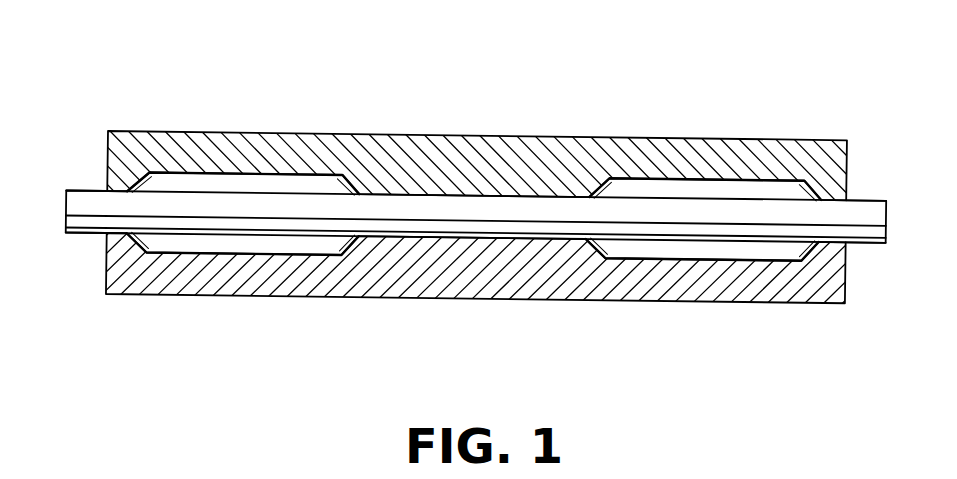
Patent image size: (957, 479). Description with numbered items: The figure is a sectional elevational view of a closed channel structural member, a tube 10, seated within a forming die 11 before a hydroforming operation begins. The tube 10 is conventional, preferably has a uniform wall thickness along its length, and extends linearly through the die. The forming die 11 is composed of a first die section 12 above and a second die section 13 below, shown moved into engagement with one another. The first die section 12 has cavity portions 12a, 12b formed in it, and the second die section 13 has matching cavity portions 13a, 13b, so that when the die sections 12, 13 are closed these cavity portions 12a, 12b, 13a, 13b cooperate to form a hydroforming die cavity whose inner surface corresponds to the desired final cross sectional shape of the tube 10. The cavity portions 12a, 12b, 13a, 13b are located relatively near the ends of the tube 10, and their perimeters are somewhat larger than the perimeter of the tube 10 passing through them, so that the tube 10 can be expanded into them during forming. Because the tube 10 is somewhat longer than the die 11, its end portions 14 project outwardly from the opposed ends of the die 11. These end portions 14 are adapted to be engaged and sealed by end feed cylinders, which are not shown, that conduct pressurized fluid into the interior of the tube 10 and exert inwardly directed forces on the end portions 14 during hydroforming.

The tube 10 is at (516, 211).
The forming die 11 is at (124, 101).
The first die section 12 is at (204, 150).
The cavity portion 12a is at (266, 174).
The cavity portion 12b is at (726, 181).
The second die section 13 is at (198, 282).
The cavity portion 13a is at (282, 256).
The cavity portion 13b is at (715, 261).
The end portions 14 is at (83, 197).